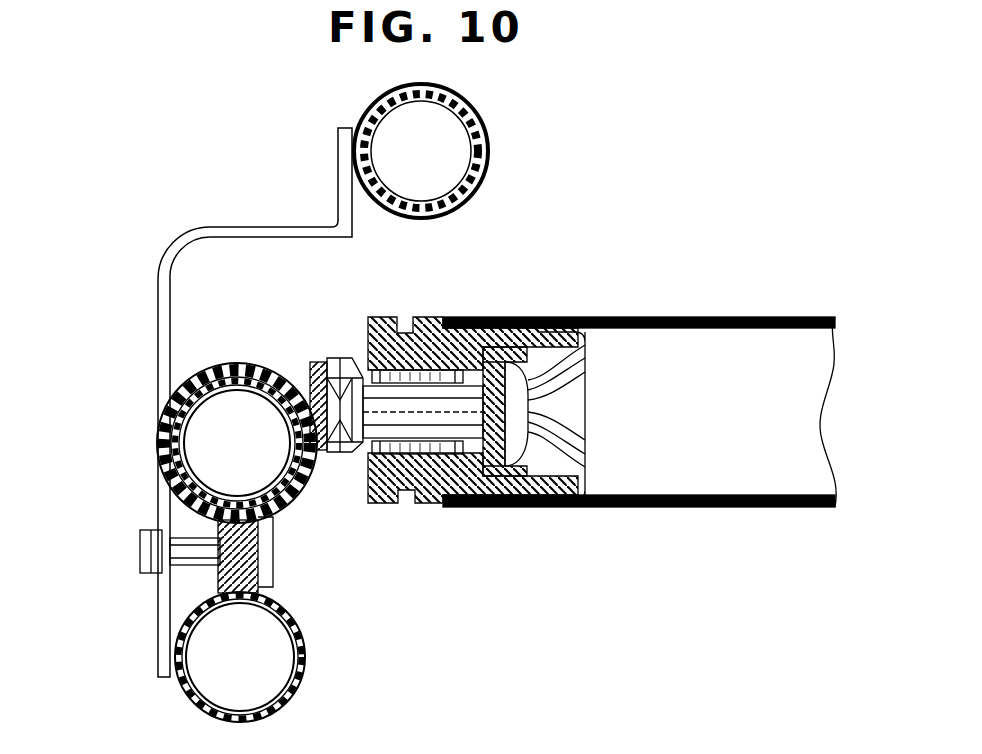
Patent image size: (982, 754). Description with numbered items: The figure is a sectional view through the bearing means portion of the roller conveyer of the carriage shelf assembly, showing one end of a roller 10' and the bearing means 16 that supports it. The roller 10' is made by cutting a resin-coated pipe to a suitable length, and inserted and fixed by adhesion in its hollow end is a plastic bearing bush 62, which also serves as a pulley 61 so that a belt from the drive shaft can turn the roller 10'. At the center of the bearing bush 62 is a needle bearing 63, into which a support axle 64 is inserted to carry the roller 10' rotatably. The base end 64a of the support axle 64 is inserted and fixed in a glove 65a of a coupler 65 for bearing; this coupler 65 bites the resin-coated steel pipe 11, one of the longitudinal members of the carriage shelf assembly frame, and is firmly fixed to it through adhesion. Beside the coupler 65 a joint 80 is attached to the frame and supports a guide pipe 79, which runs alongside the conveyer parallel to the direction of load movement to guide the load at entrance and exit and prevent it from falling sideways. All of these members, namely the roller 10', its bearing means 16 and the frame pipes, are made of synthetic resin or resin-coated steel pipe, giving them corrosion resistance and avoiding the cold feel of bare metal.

The roller 10' is at (639, 357).
The longitudinal member 11 is at (190, 483).
The bearing means 16 is at (257, 355).
The pulley 61 is at (423, 320).
The bearing bush 62 is at (587, 437).
The needle bearing 63 is at (437, 472).
The support axle 64 is at (500, 477).
The base end 64a is at (297, 362).
The coupler for bearing 65 is at (193, 377).
The glove 65a is at (348, 360).
The guide pipe 79 is at (483, 138).
The joint 80 is at (218, 228).